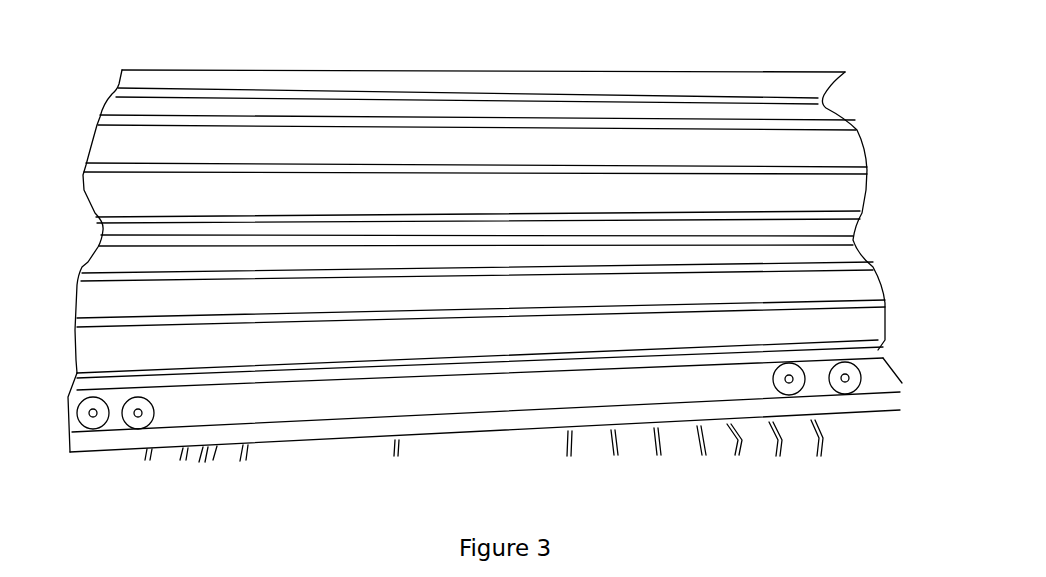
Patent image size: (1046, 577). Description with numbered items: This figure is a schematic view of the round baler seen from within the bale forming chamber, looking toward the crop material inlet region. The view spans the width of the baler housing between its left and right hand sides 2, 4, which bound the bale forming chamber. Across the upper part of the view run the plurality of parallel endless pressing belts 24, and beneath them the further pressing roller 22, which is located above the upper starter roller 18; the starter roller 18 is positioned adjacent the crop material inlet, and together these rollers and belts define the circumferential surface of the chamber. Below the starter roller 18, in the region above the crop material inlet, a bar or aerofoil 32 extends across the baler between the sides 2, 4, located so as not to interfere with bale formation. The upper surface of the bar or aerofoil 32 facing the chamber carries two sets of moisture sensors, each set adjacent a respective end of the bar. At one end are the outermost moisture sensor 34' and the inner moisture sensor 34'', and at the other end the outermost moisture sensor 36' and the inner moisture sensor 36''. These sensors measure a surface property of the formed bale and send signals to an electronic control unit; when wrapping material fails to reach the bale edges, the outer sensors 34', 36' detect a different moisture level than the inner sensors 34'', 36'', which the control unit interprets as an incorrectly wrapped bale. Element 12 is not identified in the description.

The left hand side 2 is at (60, 220).
The right hand side 4 is at (903, 227).
The hooks 12 is at (257, 453).
The first starter roller 18 is at (888, 282).
The further pressing roller 22 is at (872, 140).
The pressing belts 24 is at (78, 28).
The bar or aerofoil 32 is at (467, 400).
The outermost moisture sensor 34' is at (81, 446).
The inner moisture sensor 34'' is at (141, 446).
The outermost moisture sensor 36' is at (865, 427).
The inner moisture sensor 36'' is at (795, 426).